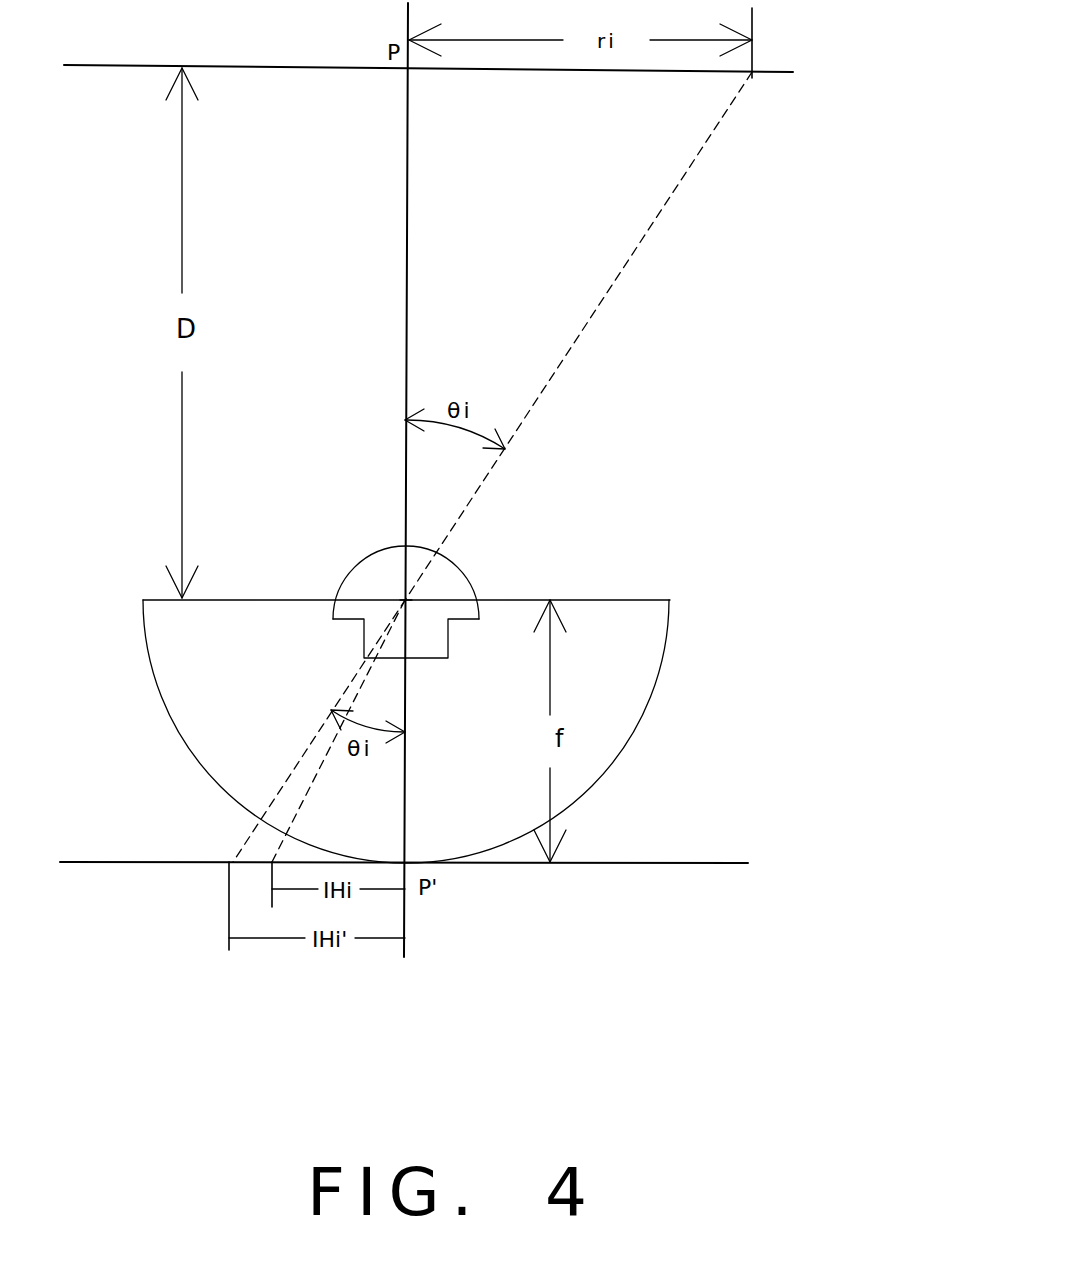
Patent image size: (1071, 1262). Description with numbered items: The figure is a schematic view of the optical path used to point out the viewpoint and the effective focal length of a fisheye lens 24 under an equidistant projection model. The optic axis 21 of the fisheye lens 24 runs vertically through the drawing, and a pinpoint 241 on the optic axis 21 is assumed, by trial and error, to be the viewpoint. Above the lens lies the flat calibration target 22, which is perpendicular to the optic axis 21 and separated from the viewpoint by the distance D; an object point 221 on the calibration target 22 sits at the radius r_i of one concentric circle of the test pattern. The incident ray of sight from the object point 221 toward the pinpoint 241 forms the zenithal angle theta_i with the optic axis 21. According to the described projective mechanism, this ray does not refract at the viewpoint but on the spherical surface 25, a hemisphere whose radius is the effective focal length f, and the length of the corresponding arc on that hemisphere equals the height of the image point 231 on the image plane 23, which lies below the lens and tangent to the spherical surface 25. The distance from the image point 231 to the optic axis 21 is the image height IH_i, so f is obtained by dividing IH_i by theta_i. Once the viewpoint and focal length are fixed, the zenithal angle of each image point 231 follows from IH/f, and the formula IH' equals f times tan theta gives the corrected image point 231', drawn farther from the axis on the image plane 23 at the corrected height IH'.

The optic axis 21 is at (405, 912).
The calibration target 22 is at (778, 73).
The object point 221 is at (752, 78).
The image plane 23 is at (725, 868).
The image point 231 is at (201, 843).
The corrected image point 231' is at (167, 922).
The fisheye lens 24 is at (468, 577).
The pinpoint 241 is at (405, 598).
The spherical surface 25 is at (638, 730).